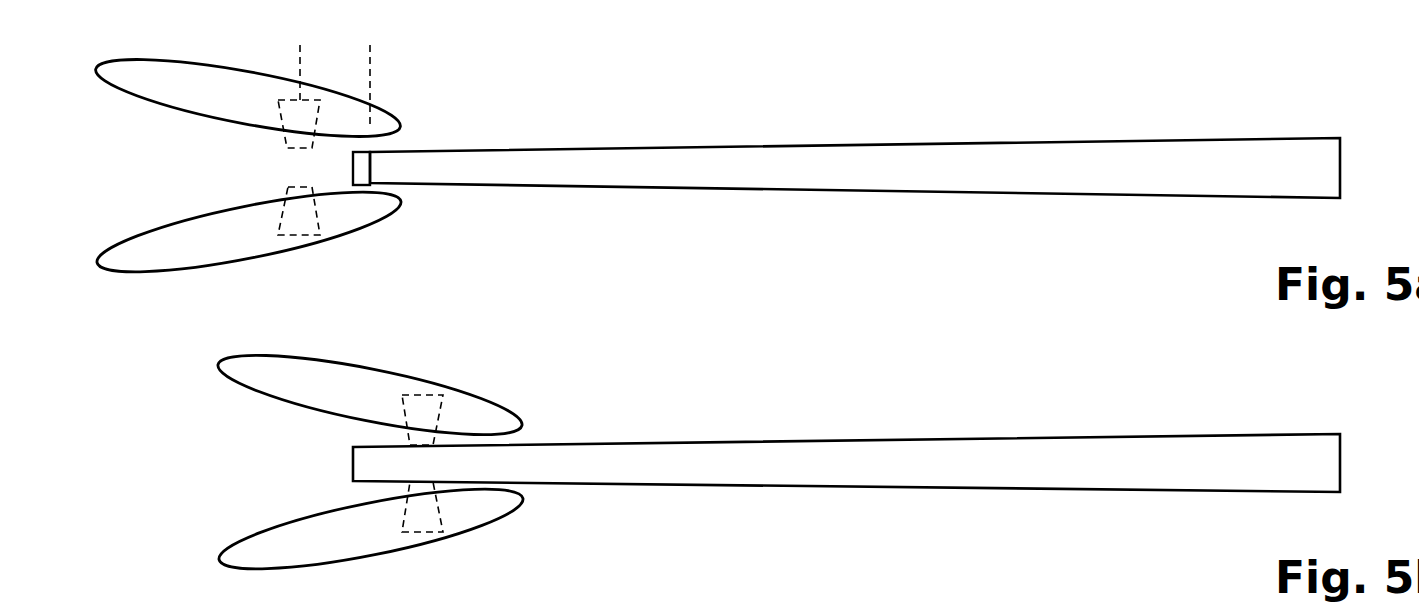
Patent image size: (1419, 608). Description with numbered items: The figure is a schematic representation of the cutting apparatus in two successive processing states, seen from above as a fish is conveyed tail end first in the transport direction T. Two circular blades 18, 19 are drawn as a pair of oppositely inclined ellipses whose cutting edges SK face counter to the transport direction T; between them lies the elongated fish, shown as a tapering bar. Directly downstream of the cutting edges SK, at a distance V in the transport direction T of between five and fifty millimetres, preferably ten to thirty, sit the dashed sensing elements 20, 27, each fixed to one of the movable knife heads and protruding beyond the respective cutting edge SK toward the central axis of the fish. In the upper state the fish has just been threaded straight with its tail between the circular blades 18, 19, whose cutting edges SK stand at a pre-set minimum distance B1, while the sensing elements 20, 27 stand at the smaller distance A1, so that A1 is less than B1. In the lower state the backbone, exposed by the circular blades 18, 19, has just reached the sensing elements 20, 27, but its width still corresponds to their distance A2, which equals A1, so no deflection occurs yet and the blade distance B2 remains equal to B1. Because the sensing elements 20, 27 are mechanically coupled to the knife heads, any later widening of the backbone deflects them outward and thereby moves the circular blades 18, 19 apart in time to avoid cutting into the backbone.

In FIG. 5A, the circular blade 18 is at (106, 74).
In FIG. 5B, the circular blade 18 is at (228, 370).
In FIG. 5A, the circular blade 19 is at (106, 258).
In FIG. 5B, the circular blade 19 is at (228, 556).
In FIG. 5A, the sensing element 20 is at (283, 100).
In FIG. 5B, the sensing element 20 is at (405, 395).
In FIG. 5A, the sensing element 27 is at (298, 235).
In FIG. 5B, the sensing element 27 is at (422, 532).
In FIG. 5A, the cutting edge SK is at (402, 126).
In FIG. 5B, the cutting edge SK is at (520, 425).
In FIG. 5A, the transport direction T is at (1067, 103).
In FIG. 5A, the distance between cutting edge and sensing element V is at (370, 51).
In FIG. 5A, the distance of the sensing elements A1 is at (300, 150).
In FIG. 5A, the minimum distance of the cutting edges B1 is at (370, 143).
In FIG. 5B, the distance of the sensing elements A2 is at (422, 447).
In FIG. 5B, the distance of the cutting edges B2 is at (493, 437).